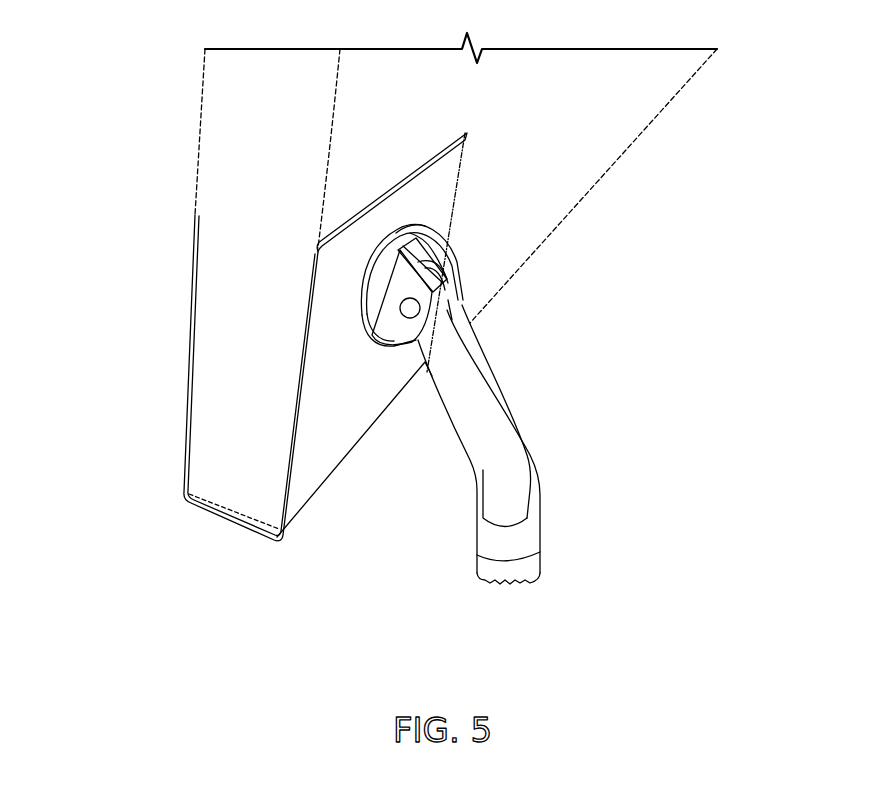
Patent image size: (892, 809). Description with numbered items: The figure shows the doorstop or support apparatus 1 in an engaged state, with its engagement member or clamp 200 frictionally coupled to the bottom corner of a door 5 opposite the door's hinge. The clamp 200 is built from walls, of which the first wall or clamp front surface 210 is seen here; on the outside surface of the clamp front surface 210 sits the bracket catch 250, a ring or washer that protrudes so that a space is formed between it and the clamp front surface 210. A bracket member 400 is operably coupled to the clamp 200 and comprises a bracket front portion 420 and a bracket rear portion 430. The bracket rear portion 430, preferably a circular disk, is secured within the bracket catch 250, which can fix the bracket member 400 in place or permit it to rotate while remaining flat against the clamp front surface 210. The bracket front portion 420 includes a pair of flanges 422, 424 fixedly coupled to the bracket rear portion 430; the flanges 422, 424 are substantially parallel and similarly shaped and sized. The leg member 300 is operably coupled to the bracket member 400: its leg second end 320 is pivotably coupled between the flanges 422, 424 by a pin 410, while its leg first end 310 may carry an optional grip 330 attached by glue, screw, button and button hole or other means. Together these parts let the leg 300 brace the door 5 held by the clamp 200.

The door 5 is at (238, 197).
The support apparatus 1 is at (618, 349).
The engagement member 200 is at (342, 503).
The first wall 210 is at (334, 466).
The bracket catch 250 is at (421, 219).
The leg member 300 is at (535, 480).
The leg first end 310 is at (532, 528).
The leg second end 320 is at (448, 303).
The grip 330 is at (515, 580).
The bracket member 400 is at (474, 285).
The pin 410 is at (410, 316).
The bracket front portion 420 is at (415, 242).
The flange 422 is at (403, 287).
The flange 424 is at (456, 262).
The bracket rear portion 430 is at (366, 328).